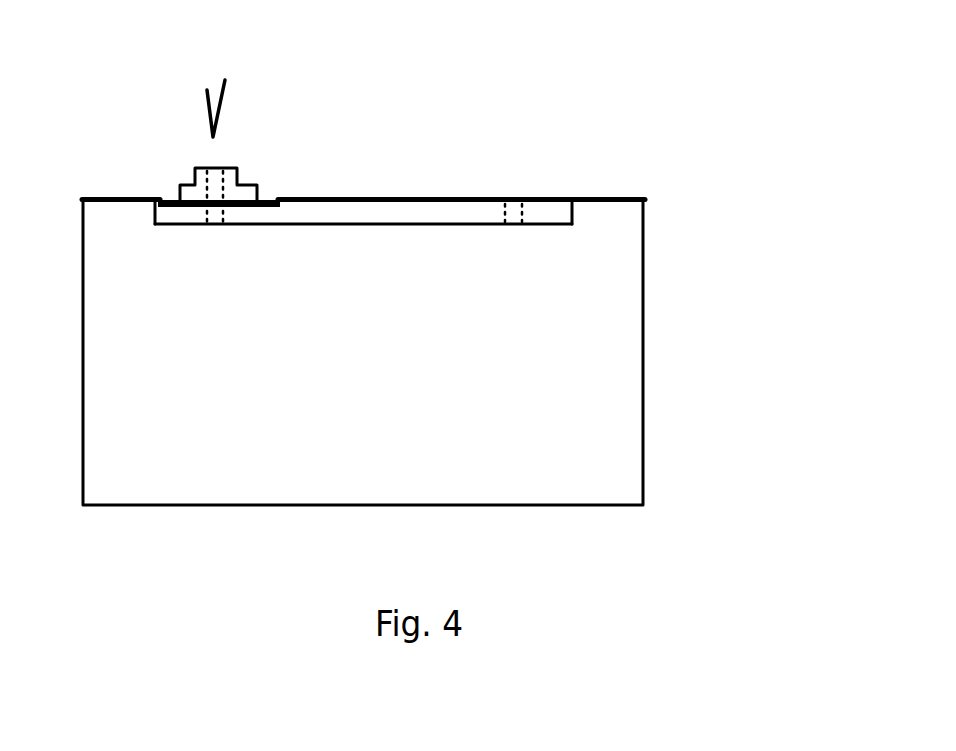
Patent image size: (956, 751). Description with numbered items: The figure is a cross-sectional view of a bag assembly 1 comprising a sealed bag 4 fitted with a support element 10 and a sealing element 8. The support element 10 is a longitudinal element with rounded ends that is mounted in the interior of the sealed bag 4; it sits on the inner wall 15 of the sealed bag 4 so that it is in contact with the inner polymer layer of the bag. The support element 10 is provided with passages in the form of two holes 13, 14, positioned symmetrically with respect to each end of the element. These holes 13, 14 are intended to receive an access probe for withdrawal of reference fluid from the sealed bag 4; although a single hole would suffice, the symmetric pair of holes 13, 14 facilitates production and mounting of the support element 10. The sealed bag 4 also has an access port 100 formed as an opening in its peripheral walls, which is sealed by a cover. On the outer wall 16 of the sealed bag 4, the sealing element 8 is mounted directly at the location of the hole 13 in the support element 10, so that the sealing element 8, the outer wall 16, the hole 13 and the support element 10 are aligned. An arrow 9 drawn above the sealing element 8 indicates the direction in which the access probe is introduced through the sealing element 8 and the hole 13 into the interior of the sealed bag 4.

The bag assembly 1 is at (705, 278).
The sealed bag 4 is at (607, 413).
The sealing element 8 is at (243, 183).
The applied force 9 is at (230, 97).
The support element 10 is at (380, 215).
The hole 13 is at (218, 227).
The hole 14 is at (515, 228).
The inner wall 15 is at (613, 203).
The outer wall 16 is at (582, 196).
The access port 100 is at (175, 197).